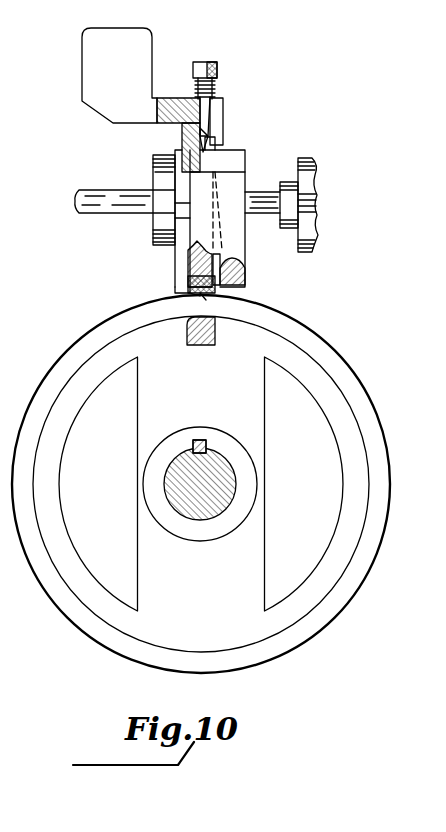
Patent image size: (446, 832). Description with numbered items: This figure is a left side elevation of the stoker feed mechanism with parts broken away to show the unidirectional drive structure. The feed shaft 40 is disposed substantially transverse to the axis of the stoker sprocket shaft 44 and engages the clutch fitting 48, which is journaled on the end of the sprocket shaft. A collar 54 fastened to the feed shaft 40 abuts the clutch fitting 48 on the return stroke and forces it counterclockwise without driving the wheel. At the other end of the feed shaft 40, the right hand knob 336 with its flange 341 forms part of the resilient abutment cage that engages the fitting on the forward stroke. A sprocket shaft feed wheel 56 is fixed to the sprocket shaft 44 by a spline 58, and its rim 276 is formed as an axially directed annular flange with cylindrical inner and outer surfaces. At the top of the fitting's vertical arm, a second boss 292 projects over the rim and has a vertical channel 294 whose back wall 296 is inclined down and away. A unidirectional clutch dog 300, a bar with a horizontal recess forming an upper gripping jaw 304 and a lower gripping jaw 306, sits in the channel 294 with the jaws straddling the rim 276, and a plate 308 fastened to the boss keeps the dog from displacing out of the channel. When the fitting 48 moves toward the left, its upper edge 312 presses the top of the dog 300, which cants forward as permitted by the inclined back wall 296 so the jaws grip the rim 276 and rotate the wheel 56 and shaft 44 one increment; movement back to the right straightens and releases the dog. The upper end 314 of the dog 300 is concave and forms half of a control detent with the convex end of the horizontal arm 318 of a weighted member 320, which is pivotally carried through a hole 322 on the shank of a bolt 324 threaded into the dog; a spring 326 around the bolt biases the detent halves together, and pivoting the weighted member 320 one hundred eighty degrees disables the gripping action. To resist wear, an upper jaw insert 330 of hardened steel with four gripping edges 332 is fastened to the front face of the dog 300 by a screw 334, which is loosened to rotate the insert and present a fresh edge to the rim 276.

The feed shaft 40 is at (92, 206).
The stoker sprocket shaft 44 is at (185, 510).
The clutch fitting 48 is at (178, 218).
The collar 54 is at (160, 178).
The wheel 56 is at (128, 625).
The spline 58 is at (200, 440).
The rim 276 is at (85, 340).
The second boss 292 is at (237, 185).
The vertical channel 294 is at (240, 247).
The back wall 296 is at (246, 278).
The unidirectional clutch dog 300 is at (197, 245).
The upper gripping jaw 304 is at (204, 298).
The lower gripping jaw 306 is at (187, 324).
The plate 308 is at (160, 228).
The upper edge 312 is at (222, 147).
The upper end 314 is at (182, 137).
The horizontal arm 318 is at (168, 99).
The weighted member 320 is at (135, 52).
The hole 322 is at (204, 117).
The bolt 324 is at (207, 67).
The spring 326 is at (214, 86).
The upper jaw insert 330 is at (194, 298).
The gripping edges 332 is at (190, 283).
The screw 334 is at (200, 292).
The knob 336 is at (280, 226).
The flange 341 is at (318, 178).